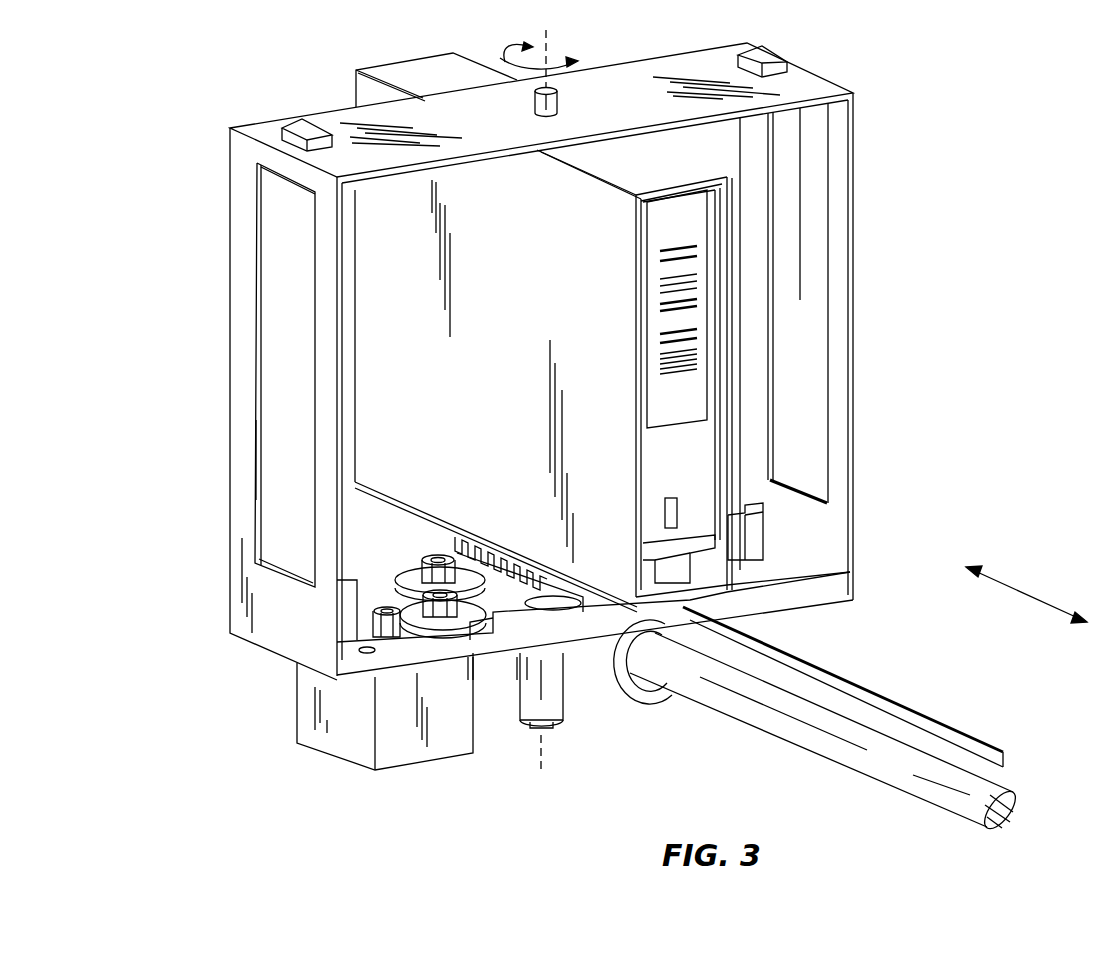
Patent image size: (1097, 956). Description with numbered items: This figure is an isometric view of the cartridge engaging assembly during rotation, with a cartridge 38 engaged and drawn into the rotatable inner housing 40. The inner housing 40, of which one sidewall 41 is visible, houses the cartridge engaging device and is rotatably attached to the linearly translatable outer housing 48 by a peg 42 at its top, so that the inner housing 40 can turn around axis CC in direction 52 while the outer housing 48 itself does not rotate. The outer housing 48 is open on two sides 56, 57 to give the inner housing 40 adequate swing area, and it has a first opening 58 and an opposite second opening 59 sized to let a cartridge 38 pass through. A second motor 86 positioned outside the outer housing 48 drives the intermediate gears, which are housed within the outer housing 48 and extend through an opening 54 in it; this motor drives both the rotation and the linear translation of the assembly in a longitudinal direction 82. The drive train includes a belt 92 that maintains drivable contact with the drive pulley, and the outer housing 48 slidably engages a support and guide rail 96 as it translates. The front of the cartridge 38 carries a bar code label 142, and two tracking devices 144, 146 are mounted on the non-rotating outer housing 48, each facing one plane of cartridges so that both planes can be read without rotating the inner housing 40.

The cartridge 38 is at (700, 455).
The inner housing 40 is at (400, 68).
The sidewall 41 is at (557, 253).
The peg 42 is at (557, 102).
The outer housing 48 is at (230, 253).
The direction of rotation 52 is at (515, 48).
The opening 54 is at (363, 632).
The open side 56 is at (845, 540).
The open side 57 is at (306, 104).
The first opening 58 is at (262, 380).
The second opening 59 is at (825, 339).
The longitudinal direction 82 is at (1028, 590).
The second motor 86 is at (297, 698).
The belt 92 is at (907, 700).
The support and guide rail 96 is at (742, 722).
The bar code label 142 is at (685, 218).
The tracking device 144 is at (297, 120).
The tracking device 146 is at (780, 53).